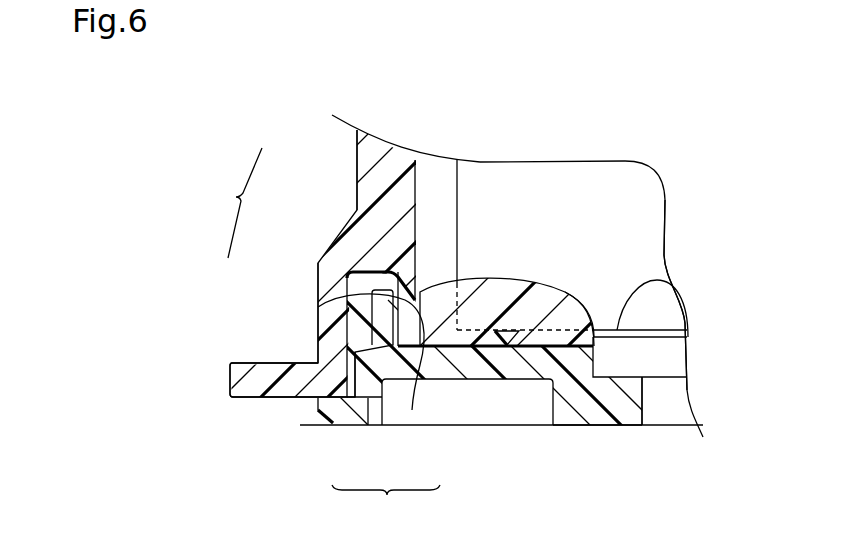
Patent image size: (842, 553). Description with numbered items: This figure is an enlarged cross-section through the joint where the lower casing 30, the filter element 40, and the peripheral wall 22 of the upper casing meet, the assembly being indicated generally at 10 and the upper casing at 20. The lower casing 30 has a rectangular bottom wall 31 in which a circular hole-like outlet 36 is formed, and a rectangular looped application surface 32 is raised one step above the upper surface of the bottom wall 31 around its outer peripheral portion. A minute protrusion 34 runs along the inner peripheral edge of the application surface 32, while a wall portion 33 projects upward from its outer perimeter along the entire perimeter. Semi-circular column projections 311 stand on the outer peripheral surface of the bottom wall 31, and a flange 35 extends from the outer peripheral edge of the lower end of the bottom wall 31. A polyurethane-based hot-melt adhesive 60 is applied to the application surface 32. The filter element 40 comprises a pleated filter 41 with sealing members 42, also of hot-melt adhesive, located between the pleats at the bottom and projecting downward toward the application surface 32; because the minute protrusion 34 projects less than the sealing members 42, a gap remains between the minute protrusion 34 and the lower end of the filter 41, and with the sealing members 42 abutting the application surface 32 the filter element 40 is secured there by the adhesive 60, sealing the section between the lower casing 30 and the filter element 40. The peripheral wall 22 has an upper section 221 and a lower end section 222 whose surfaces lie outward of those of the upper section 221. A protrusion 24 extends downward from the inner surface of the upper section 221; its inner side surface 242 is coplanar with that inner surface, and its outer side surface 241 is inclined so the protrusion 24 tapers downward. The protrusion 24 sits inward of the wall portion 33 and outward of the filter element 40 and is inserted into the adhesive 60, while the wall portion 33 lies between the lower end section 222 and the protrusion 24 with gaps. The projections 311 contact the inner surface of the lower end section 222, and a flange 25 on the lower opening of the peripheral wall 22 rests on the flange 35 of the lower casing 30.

The sealing device 10 is at (183, 143).
The inner member 20 is at (352, 140).
The peripheral wall 22 is at (233, 203).
The upper section 221 is at (357, 162).
The lower end section 222 is at (318, 273).
The protrusion 24 is at (425, 428).
The outer side surface 241 is at (368, 410).
The inner side surface 242 is at (412, 410).
The flange 25 is at (232, 375).
The lower casing 30 is at (563, 431).
The bottom wall 31 is at (605, 427).
The projections 311 is at (338, 366).
The application surface 32 is at (562, 332).
The wall portion 33 is at (318, 307).
The minute protrusion 34 is at (660, 280).
The flange 35 is at (320, 409).
The outlet 36 is at (642, 413).
The filter element 40 is at (449, 174).
The filter 41 is at (658, 215).
The sealing members 42 is at (487, 363).
The adhesive 60 is at (500, 287).